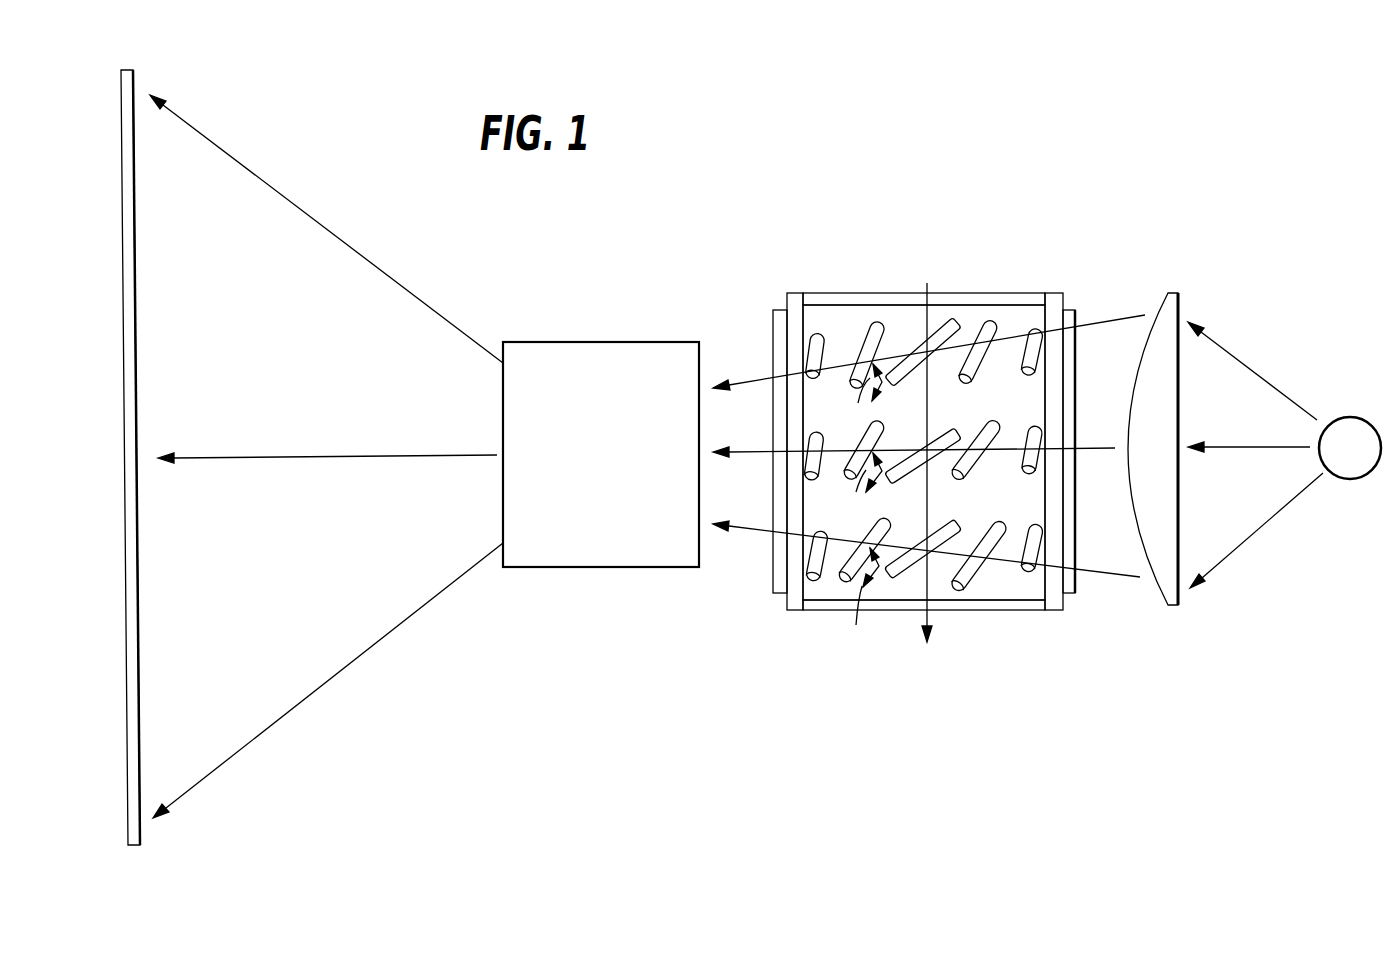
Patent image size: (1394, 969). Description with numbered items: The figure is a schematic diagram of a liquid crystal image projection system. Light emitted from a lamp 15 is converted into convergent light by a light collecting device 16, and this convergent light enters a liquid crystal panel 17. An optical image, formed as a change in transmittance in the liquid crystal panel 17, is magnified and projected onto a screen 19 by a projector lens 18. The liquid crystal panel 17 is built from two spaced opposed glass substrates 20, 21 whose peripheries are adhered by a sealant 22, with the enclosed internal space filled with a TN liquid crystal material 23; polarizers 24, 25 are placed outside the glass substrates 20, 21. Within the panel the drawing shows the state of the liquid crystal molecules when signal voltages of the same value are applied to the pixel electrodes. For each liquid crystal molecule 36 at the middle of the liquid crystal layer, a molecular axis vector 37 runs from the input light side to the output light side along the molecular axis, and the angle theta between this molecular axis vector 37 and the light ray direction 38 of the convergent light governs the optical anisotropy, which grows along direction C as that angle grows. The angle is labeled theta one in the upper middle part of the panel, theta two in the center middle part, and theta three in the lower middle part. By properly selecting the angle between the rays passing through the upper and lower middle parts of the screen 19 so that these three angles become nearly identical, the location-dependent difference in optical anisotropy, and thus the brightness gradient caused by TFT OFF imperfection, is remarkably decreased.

The lamp 15 is at (1345, 430).
The light collecting device 16 is at (1180, 296).
The liquid crystal panel 17 is at (1098, 197).
The projector lens 18 is at (568, 355).
The screen 19 is at (130, 72).
The glass substrate 20 is at (1057, 610).
The glass substrate 21 is at (792, 608).
The sealant 22 is at (828, 300).
The TN liquid crystal material 23 is at (1028, 310).
The polarizer 24 is at (1073, 593).
The polarizer 25 is at (778, 595).
The liquid crystal molecule 36 is at (937, 307).
The molecular axis vector 37 is at (958, 307).
The light ray direction 38 is at (1108, 315).
The direction C is at (925, 288).